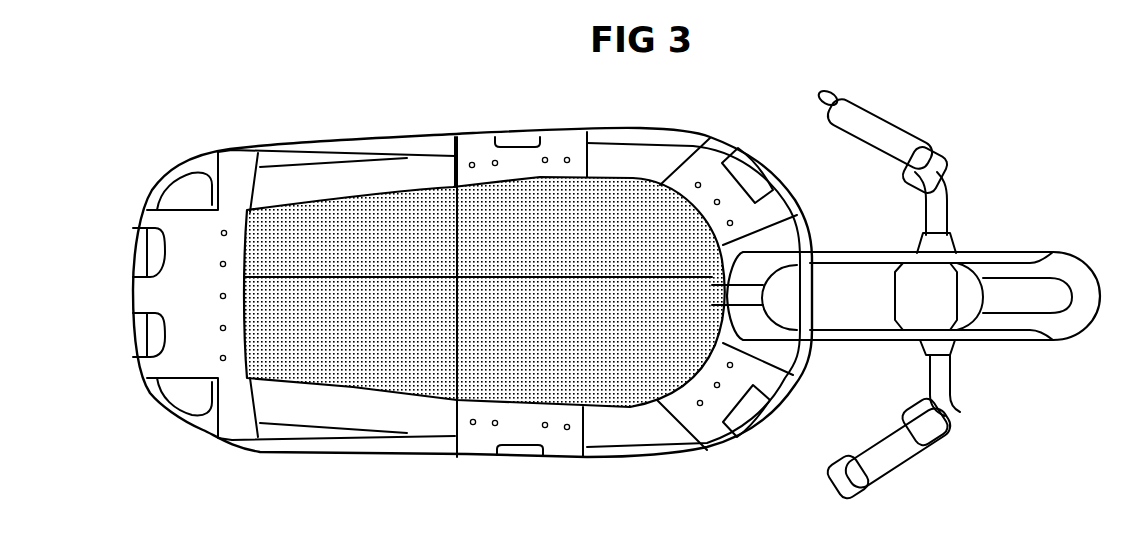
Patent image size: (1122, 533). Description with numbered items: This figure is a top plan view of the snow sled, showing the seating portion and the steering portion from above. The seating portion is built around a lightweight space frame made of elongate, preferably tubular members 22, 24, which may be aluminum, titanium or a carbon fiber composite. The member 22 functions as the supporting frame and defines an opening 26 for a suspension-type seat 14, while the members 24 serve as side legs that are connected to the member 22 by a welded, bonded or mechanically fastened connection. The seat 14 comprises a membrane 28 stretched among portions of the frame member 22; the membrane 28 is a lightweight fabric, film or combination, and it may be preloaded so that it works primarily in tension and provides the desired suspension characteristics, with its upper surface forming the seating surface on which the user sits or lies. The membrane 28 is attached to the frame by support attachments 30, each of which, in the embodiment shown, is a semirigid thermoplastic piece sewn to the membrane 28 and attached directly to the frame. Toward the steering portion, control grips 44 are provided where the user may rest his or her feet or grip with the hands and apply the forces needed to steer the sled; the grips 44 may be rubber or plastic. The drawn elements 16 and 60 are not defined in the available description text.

The mesh panel 14 is at (413, 232).
The tow arm 16 is at (906, 392).
The frame rim 22 is at (662, 137).
The side rails 24 is at (323, 140).
The corner bracket 26 is at (645, 432).
The center strap 28 is at (567, 273).
The mounting bracket 30 is at (522, 423).
The handle grip 44 is at (883, 140).
The hitch 60 is at (985, 525).